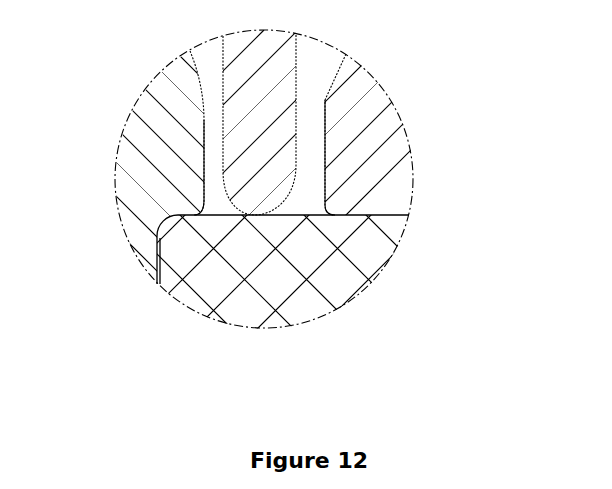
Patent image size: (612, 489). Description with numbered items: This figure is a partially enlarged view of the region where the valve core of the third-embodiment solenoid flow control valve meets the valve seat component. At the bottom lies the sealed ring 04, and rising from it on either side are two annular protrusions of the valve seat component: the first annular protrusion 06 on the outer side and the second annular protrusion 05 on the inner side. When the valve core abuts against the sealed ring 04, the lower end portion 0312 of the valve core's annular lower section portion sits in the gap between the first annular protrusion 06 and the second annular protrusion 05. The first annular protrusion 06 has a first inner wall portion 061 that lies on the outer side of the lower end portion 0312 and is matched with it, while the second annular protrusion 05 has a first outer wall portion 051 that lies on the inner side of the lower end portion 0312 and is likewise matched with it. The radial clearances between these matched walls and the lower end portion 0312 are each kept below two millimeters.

The second annular protrusion 05 is at (195, 153).
The first outer wall portion 051 is at (198, 183).
The lower end portion 0312 is at (257, 155).
The first annular protrusion 06 is at (327, 140).
The first inner wall portion 061 is at (327, 173).
The sealed ring 04 is at (263, 263).